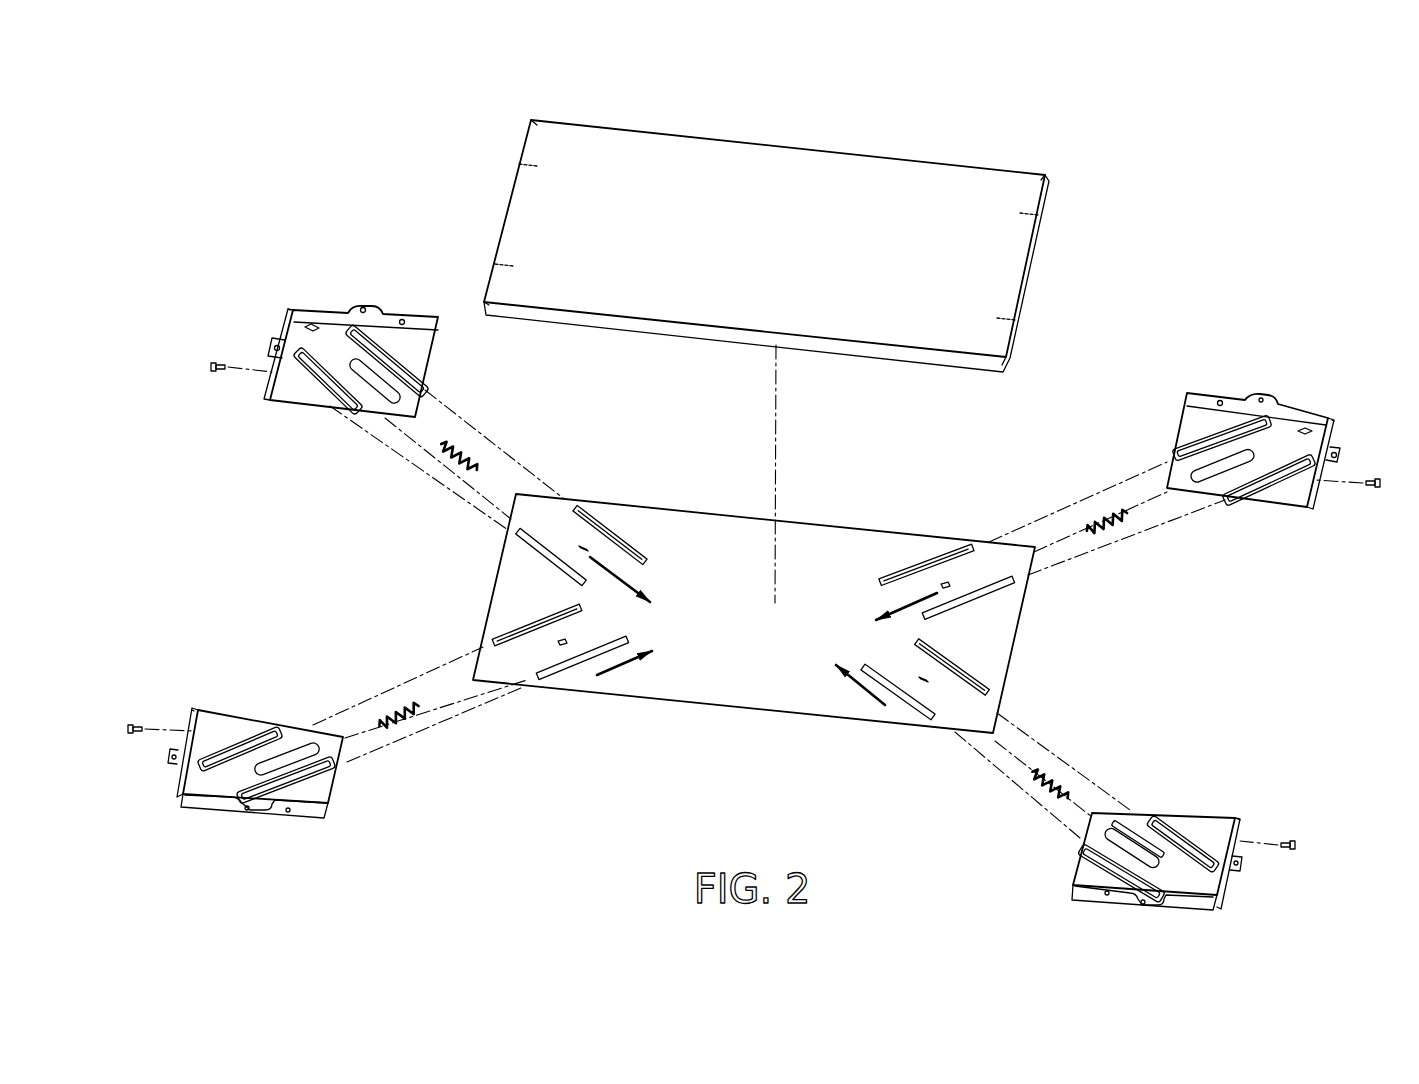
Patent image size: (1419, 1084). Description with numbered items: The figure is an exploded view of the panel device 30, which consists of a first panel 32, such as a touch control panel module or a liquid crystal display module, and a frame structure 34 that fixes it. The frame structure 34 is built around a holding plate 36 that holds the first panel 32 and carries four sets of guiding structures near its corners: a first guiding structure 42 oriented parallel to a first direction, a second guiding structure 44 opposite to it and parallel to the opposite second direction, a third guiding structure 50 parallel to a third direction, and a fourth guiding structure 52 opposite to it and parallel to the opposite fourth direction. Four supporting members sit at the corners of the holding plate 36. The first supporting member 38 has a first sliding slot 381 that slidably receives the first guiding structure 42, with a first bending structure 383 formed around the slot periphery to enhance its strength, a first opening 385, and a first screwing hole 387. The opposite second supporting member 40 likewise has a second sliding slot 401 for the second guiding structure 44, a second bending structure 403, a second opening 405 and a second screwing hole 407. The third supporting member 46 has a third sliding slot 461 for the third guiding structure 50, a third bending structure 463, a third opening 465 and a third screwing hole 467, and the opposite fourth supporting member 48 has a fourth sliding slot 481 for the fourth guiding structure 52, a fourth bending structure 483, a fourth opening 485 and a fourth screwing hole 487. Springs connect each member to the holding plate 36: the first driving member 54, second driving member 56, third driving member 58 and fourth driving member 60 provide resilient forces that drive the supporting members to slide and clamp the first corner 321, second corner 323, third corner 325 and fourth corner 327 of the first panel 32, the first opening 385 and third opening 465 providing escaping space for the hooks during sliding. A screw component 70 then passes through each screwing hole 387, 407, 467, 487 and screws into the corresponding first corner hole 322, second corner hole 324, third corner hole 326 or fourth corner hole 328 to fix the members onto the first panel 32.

The panel device 30 is at (1272, 150).
The first panel 32 is at (850, 140).
The first corner 321 is at (1025, 178).
The first corner hole 322 is at (1042, 214).
The second corner 323 is at (486, 298).
The second corner hole 324 is at (492, 264).
The third corner 325 is at (538, 130).
The third corner hole 326 is at (517, 163).
The fourth corner 327 is at (978, 340).
The fourth corner hole 328 is at (1020, 319).
The frame structure 34 is at (1140, 322).
The holding plate 36 is at (746, 688).
The first supporting member 38 is at (1303, 388).
The first sliding slot 381 is at (1165, 461).
The first bending structure 383 is at (1206, 437).
The first opening 385 is at (1250, 455).
The first screwing hole 387 is at (1318, 481).
The second supporting member 40 is at (205, 815).
The second sliding slot 401 is at (287, 727).
The second bending structure 403 is at (219, 753).
The second opening 405 is at (270, 766).
The second screwing hole 407 is at (192, 728).
The first guiding structure 42 is at (931, 560).
The second guiding structure 44 is at (520, 630).
The third supporting member 46 is at (305, 297).
The third sliding slot 461 is at (432, 388).
The third bending structure 463 is at (390, 340).
The third opening 465 is at (352, 366).
The third screwing hole 467 is at (275, 370).
The fourth supporting member 48 is at (1237, 890).
The fourth sliding slot 481 is at (1143, 817).
The fourth bending structure 483 is at (1187, 842).
The fourth opening 485 is at (1116, 829).
The fourth screwing hole 487 is at (1233, 838).
The third guiding structure 50 is at (621, 531).
The fourth guiding structure 52 is at (907, 712).
The first driving member 54 is at (1105, 530).
The second driving member 56 is at (414, 705).
The third driving member 58 is at (480, 468).
The fourth driving member 60 is at (1040, 793).
The screw component 70 is at (210, 367).